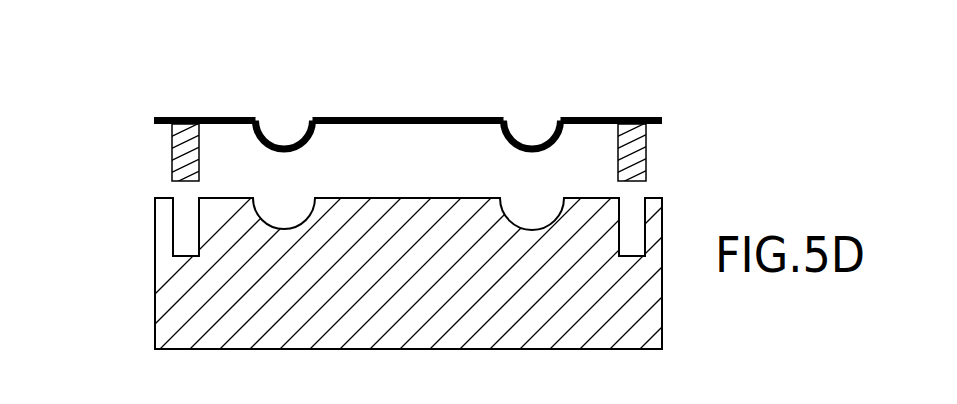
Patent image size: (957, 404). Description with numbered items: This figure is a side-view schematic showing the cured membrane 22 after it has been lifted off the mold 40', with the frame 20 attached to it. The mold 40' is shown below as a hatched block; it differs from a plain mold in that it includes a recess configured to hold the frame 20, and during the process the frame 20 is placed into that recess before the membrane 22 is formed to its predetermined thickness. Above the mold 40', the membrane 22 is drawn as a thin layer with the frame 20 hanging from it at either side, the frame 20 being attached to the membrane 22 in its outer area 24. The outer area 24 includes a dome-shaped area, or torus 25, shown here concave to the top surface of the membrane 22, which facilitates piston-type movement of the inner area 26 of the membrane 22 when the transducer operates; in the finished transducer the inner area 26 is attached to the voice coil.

The mold 40' is at (358, 106).
The frame 20 is at (185, 145).
The membrane 22 is at (327, 115).
The outer area 24 is at (599, 95).
The torus 25 is at (533, 148).
The inner area 26 is at (380, 101).